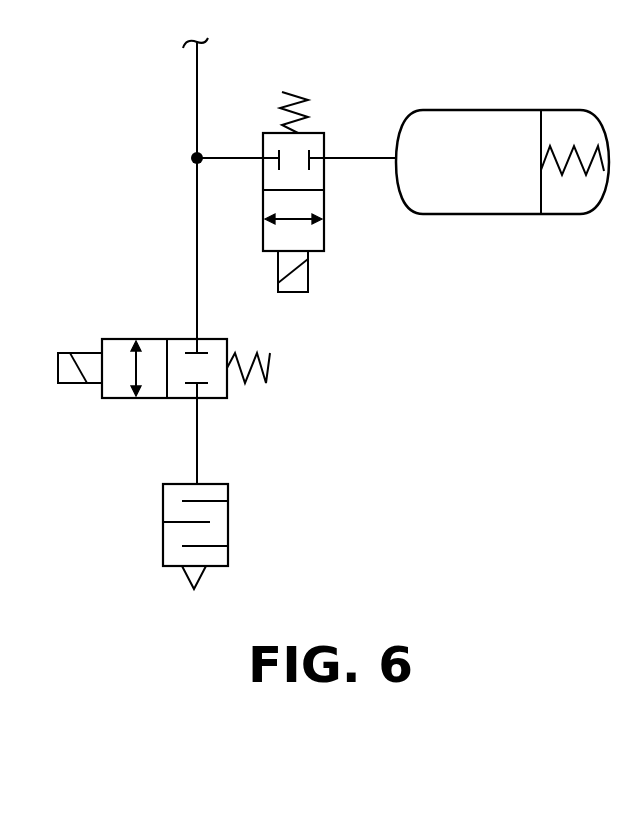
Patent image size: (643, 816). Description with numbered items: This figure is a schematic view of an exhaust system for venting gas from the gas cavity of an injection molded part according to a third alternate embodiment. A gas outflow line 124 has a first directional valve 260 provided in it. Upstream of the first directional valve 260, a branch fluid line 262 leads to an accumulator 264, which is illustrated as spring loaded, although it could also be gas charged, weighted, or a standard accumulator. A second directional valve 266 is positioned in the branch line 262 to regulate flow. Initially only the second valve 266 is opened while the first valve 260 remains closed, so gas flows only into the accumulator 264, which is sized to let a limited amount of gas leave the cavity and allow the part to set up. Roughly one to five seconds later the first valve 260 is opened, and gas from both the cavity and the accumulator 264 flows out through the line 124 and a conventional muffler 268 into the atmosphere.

The gas outflow line 124 is at (196, 91).
The branch fluid line 262 is at (231, 158).
The accumulator 264 is at (487, 110).
The second directional valve 266 is at (324, 236).
The first directional valve 260 is at (150, 398).
The muffler 268 is at (228, 507).